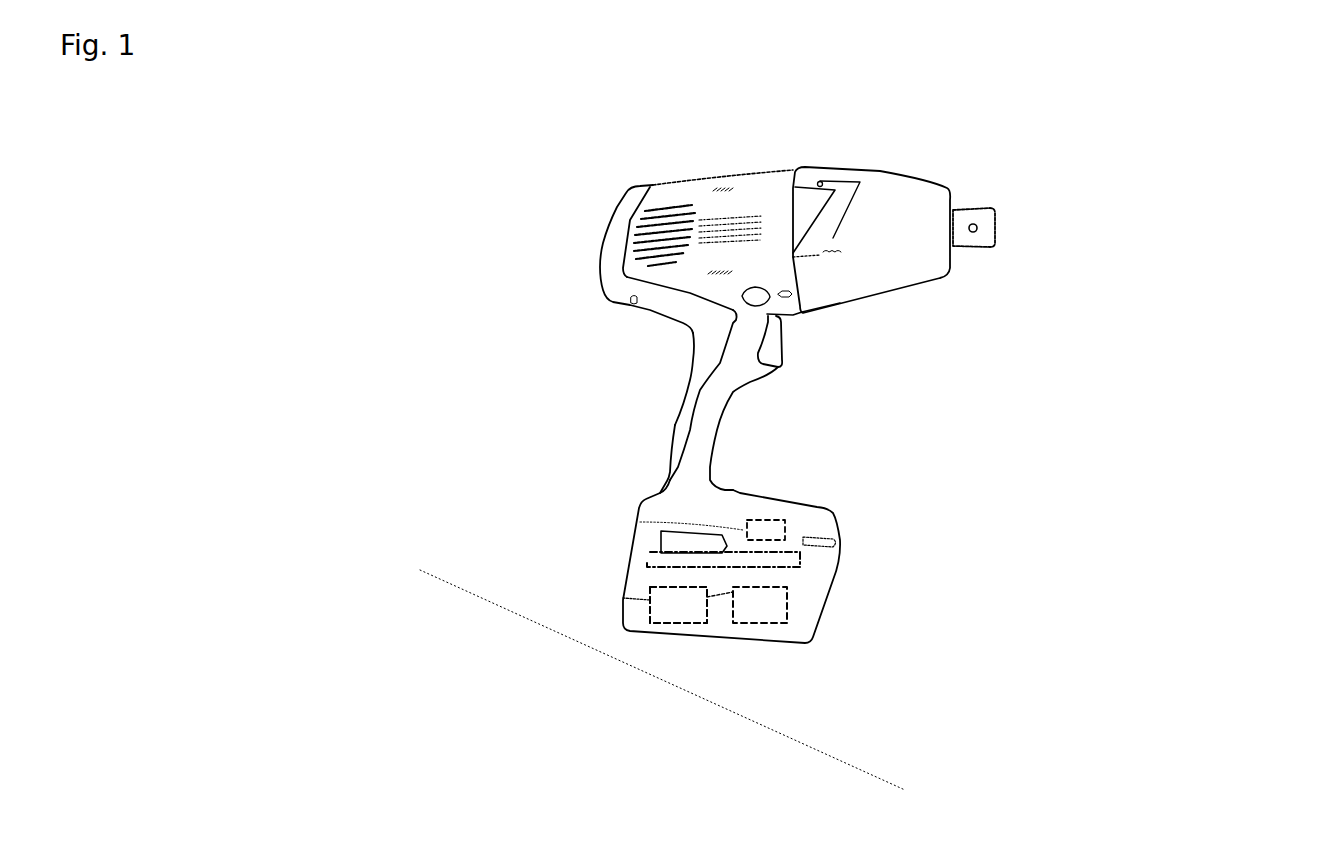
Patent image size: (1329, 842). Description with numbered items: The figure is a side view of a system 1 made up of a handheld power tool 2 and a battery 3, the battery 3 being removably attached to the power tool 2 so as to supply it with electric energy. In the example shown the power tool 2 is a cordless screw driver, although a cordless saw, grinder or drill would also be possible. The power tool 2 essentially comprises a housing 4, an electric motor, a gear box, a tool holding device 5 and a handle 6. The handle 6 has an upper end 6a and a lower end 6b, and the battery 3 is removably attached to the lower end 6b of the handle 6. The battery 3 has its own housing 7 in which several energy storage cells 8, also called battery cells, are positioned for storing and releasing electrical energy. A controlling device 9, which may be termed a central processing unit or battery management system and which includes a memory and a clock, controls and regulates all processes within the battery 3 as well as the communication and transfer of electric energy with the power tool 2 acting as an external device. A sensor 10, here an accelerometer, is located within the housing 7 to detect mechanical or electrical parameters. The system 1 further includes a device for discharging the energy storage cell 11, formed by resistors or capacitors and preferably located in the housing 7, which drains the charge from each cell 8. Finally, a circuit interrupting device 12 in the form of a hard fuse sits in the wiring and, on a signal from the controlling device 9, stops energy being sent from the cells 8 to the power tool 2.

The system 1 is at (1232, 198).
The handheld power tool 2 is at (653, 255).
The battery 3 is at (813, 575).
The housing 4 is at (770, 200).
The tool holding device 5 is at (962, 233).
The handle 6 is at (706, 413).
The upper end 6a is at (700, 330).
The lower end 6b is at (677, 497).
The housing 7 is at (813, 613).
The energy storage cells 8 is at (665, 560).
The controlling device 9 is at (770, 530).
The sensor 10 is at (760, 607).
The device for discharging the energy storage cell 11 is at (678, 602).
The circuit interrupting device 12 is at (678, 602).